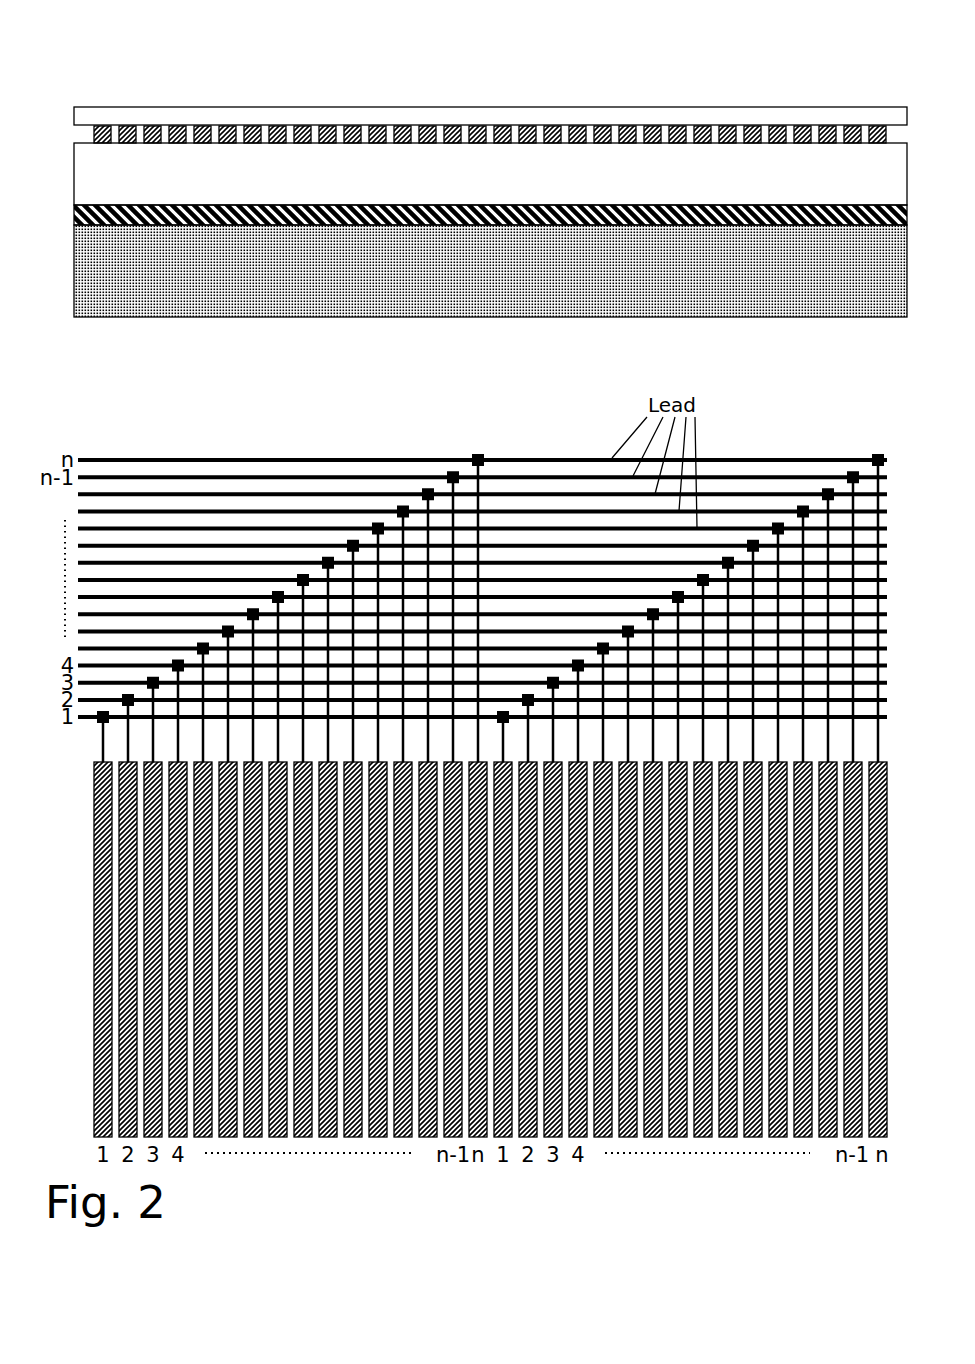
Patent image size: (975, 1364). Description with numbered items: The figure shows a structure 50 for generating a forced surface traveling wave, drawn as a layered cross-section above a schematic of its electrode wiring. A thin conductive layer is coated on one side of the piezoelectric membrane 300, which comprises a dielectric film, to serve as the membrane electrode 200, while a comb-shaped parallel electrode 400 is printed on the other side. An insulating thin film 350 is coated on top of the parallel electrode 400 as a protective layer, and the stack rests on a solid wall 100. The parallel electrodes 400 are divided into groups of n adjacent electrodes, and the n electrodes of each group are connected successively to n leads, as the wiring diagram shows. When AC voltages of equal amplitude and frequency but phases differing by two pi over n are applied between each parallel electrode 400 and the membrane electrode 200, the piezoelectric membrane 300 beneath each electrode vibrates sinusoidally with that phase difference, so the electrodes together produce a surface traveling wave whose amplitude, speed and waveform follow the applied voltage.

The piezoelectric transducer 50 is at (108, 60).
The solid wall 100 is at (823, 267).
The membrane electrode 200 is at (273, 215).
The piezoelectric membrane 300 is at (547, 190).
The insulating thin film 350 is at (746, 113).
The parallel electrode 400 is at (726, 1183).